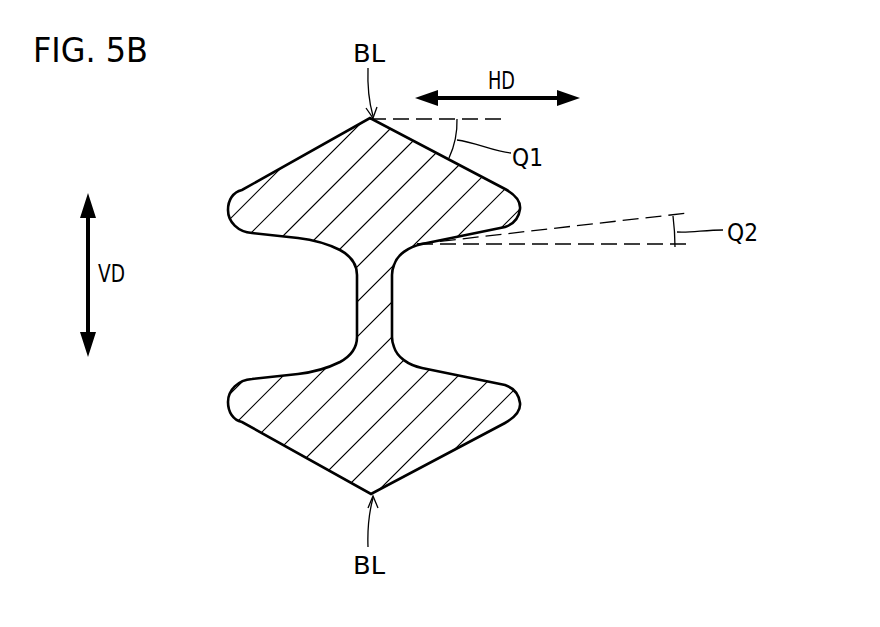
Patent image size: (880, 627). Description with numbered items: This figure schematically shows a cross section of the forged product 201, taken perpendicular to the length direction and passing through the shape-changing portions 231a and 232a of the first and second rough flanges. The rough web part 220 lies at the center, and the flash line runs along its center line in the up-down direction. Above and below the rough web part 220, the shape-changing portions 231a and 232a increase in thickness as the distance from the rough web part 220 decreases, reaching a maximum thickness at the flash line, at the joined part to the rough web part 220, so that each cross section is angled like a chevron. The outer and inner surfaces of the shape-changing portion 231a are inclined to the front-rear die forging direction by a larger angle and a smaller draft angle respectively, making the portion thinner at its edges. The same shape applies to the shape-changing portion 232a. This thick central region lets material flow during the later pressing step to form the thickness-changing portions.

The blade 201 is at (267, 129).
The shape-changing portion 231a is at (277, 188).
The shape-changing portion 232a is at (277, 433).
The rough web part 220 is at (375, 302).